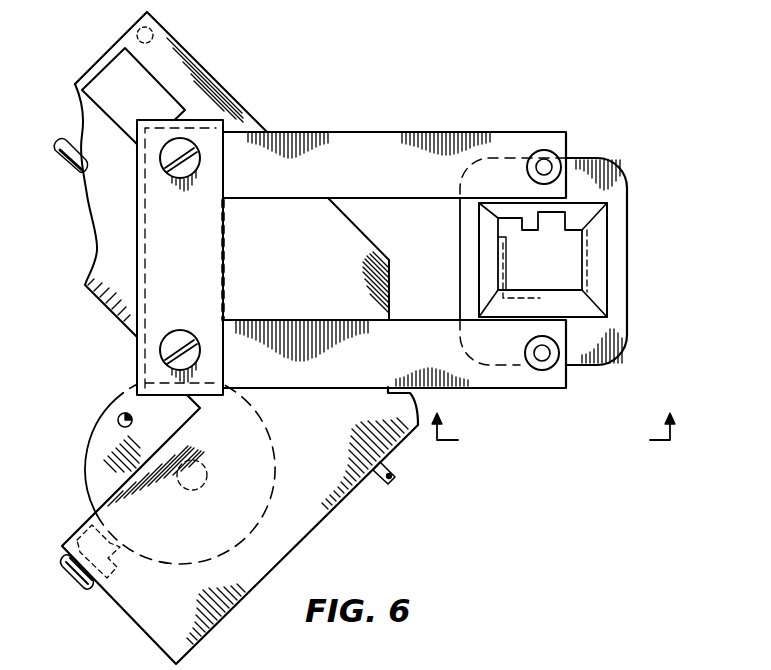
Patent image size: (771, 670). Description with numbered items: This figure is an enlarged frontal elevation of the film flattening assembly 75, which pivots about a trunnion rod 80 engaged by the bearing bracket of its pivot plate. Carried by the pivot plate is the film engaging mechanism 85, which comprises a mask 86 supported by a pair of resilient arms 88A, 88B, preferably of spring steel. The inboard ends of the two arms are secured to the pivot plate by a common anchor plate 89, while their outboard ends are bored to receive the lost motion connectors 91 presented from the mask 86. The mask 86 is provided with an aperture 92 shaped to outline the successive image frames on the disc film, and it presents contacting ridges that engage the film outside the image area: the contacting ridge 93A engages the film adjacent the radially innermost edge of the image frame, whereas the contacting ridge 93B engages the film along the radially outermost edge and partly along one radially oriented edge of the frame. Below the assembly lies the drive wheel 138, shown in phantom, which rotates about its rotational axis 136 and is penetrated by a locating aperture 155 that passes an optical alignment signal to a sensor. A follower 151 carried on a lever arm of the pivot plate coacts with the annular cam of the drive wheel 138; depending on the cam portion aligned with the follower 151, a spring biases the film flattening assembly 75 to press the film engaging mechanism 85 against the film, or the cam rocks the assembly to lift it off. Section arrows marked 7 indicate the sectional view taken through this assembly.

The film flattening assembly 75 is at (221, 64).
The film engaging mechanism 85 is at (393, 150).
The mask 86 is at (625, 330).
The resilient arm 88A is at (330, 128).
The resilient arm 88B is at (322, 318).
The common anchor plate 89 is at (213, 245).
The lost motion connectors 91 is at (544, 160).
The aperture 92 is at (582, 259).
The contacting ridge 93A is at (585, 241).
The contacting ridge 93B is at (504, 252).
The trunnion rod 80 is at (383, 486).
The rotational axis 136 is at (203, 476).
The drive wheel 138 is at (98, 452).
The follower 151 is at (85, 522).
The locating aperture 155 is at (118, 416).
The section line 7- 7 is at (553, 438).